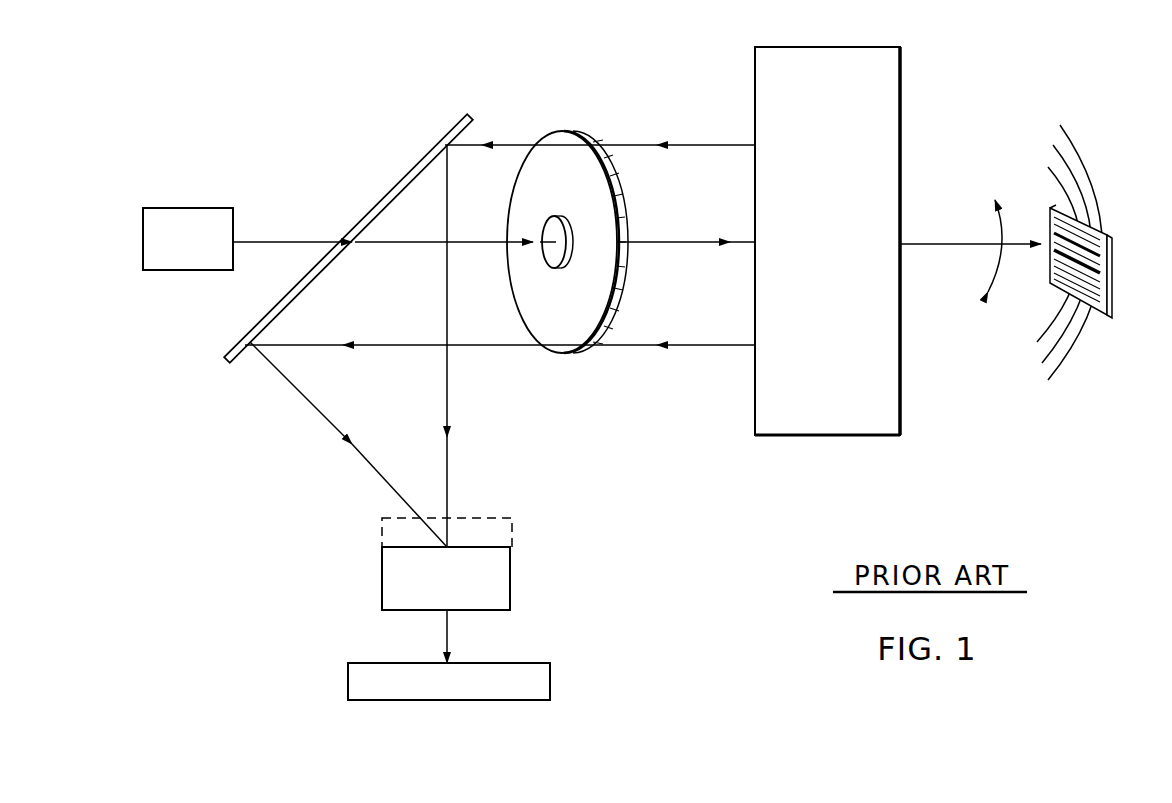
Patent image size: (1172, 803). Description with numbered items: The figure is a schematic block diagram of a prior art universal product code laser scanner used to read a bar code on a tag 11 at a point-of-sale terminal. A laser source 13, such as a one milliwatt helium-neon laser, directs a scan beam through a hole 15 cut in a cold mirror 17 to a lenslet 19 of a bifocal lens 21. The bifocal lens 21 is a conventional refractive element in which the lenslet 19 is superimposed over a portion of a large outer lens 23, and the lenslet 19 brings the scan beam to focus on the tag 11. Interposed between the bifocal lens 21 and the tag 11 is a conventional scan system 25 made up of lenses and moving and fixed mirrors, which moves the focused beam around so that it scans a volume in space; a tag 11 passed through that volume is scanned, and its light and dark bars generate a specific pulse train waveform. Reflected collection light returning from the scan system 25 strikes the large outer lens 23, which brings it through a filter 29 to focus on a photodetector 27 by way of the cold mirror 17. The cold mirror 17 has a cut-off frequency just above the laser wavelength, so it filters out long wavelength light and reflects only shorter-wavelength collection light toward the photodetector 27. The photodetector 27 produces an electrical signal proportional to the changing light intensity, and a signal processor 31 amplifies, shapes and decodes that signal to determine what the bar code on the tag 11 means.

The UPC tag 11 is at (1110, 243).
The laser source 13 is at (195, 207).
The hole 15 is at (348, 238).
The cold mirror 17 is at (405, 177).
The lenslet 19 is at (546, 222).
The bifocal lens 21 is at (604, 222).
The large outer lens 23 is at (572, 146).
The scan system 25 is at (755, 85).
The photodetector 27 is at (512, 592).
The filter 29 is at (484, 518).
The signal processor 31 is at (528, 663).